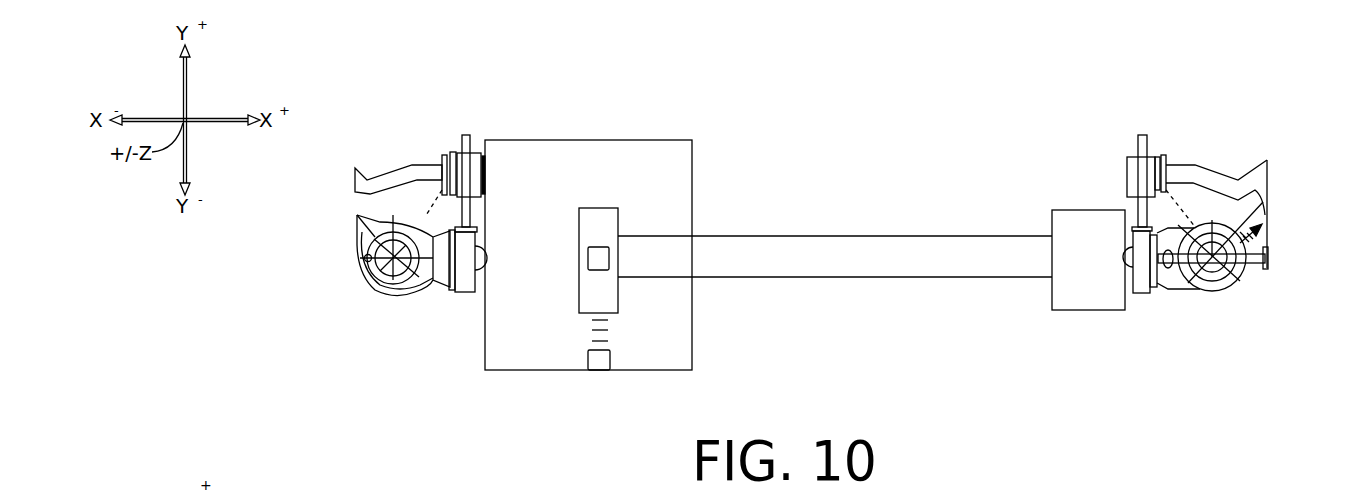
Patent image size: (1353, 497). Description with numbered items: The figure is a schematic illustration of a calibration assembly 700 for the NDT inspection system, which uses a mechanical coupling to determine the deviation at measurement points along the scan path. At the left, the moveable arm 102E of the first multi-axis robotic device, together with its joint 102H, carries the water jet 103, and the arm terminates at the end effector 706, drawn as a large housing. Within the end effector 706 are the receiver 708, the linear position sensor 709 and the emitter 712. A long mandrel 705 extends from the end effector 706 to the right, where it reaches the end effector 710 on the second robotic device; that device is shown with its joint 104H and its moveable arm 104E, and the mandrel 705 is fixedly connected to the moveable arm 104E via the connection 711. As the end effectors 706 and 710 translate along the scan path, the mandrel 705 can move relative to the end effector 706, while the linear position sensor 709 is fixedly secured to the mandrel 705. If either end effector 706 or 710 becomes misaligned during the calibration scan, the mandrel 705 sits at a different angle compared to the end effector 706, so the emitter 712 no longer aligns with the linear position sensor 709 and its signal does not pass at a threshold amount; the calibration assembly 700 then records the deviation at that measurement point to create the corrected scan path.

The calibration assembly 700 is at (860, 122).
The water jet 103 is at (395, 170).
The end effector 706 is at (552, 140).
The receiver 708 is at (579, 234).
The linear position sensor 709 is at (588, 266).
The emitter 712 is at (590, 357).
The mandrel 705 is at (822, 236).
The end effector 710 is at (1063, 210).
The connection 711 is at (1140, 245).
The joint 104H is at (1250, 232).
The moveable arm 104E is at (1242, 282).
The joint 102H is at (364, 257).
The moveable arm 102E is at (362, 284).